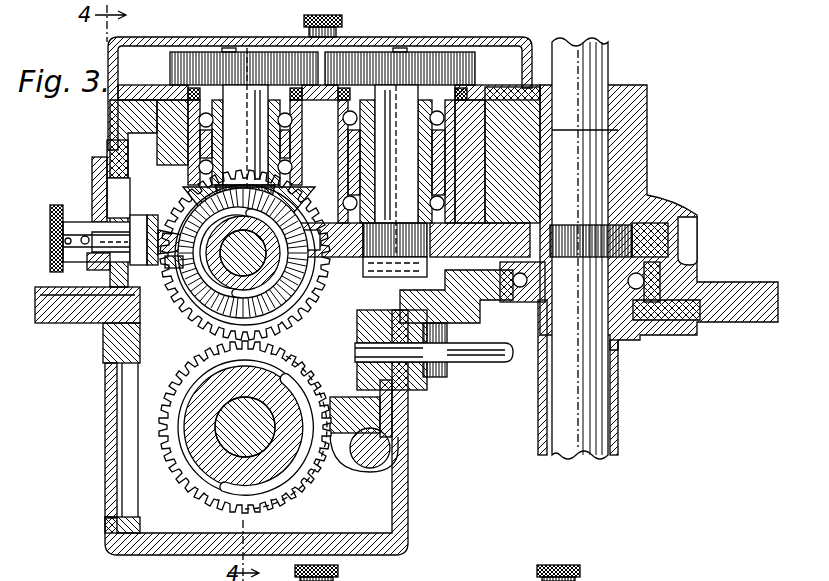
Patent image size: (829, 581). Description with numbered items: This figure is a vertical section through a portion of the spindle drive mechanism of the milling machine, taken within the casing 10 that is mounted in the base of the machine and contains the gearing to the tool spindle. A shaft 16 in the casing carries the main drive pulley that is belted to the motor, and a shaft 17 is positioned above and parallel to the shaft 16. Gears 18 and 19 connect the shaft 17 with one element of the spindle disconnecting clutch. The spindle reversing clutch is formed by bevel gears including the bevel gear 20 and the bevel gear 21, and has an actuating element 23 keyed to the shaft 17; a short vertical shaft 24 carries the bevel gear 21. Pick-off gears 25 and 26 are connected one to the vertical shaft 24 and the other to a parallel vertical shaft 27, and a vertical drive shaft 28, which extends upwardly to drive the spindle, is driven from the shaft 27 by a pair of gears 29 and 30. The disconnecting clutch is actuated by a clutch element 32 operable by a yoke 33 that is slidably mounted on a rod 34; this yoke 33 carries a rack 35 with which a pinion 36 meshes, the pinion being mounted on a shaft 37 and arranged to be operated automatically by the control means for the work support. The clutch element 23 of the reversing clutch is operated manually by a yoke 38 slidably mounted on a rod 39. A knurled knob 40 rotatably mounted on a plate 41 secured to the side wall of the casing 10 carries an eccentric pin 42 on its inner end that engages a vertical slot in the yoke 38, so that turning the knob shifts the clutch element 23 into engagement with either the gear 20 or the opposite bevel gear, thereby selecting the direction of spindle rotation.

The casing 10 is at (128, 338).
The shaft 16 is at (230, 448).
The shaft 17 is at (190, 312).
The gear 18 is at (203, 328).
The gear 19 is at (180, 372).
The bevel gear 20 is at (300, 322).
The bevel gear 21 is at (188, 192).
The actuating element 23 is at (318, 280).
The short vertical shaft 24 is at (245, 129).
The pick-off gear 25 is at (220, 60).
The pick-off gear 26 is at (398, 68).
The vertical shaft 27 is at (395, 180).
The vertical drive shaft 28 is at (585, 396).
The gear 29 is at (448, 262).
The gear 30 is at (660, 228).
The clutch element 32 is at (298, 490).
The yoke 33 is at (333, 473).
The rod 34 is at (390, 453).
The rack 35 is at (400, 417).
The pinion 36 is at (425, 382).
The shaft 37 is at (500, 370).
The yoke 38 is at (193, 283).
The rod 39 is at (162, 240).
The knurled knob 40 is at (57, 207).
The plate 41 is at (103, 160).
The eccentric pin 42 is at (92, 264).